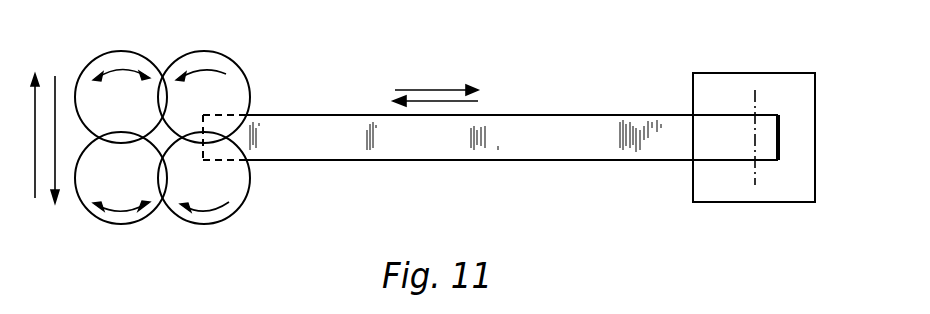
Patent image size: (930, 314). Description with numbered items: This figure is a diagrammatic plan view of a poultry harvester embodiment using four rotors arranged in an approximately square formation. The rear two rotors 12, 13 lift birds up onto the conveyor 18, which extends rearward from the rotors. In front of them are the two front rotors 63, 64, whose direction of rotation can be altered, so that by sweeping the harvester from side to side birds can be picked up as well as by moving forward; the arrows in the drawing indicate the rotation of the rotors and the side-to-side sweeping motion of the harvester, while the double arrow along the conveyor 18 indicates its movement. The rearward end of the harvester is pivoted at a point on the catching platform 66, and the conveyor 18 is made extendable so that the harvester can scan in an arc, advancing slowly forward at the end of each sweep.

The front rotor 64 is at (117, 50).
The rear rotor 13 is at (250, 72).
The front rotor 63 is at (118, 225).
The rear rotor 12 is at (238, 213).
The conveyor 18 is at (535, 120).
The catching platform 66 is at (728, 83).